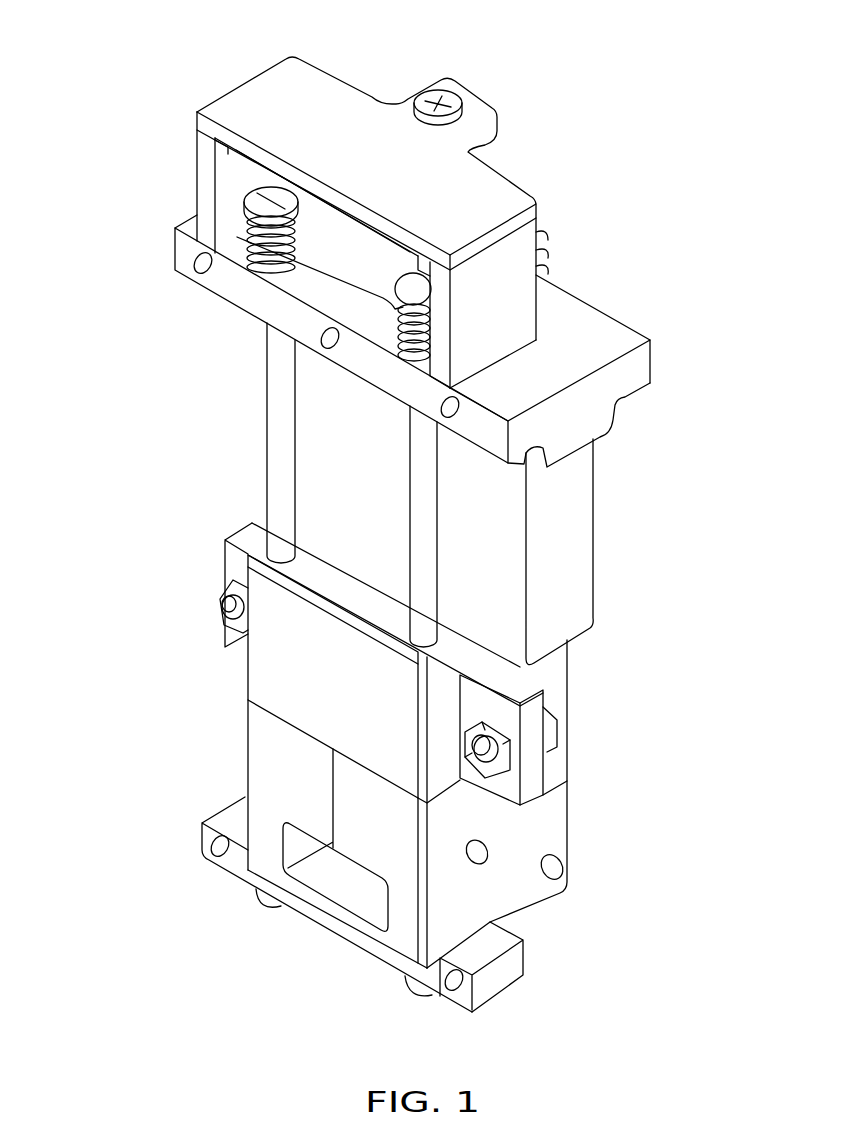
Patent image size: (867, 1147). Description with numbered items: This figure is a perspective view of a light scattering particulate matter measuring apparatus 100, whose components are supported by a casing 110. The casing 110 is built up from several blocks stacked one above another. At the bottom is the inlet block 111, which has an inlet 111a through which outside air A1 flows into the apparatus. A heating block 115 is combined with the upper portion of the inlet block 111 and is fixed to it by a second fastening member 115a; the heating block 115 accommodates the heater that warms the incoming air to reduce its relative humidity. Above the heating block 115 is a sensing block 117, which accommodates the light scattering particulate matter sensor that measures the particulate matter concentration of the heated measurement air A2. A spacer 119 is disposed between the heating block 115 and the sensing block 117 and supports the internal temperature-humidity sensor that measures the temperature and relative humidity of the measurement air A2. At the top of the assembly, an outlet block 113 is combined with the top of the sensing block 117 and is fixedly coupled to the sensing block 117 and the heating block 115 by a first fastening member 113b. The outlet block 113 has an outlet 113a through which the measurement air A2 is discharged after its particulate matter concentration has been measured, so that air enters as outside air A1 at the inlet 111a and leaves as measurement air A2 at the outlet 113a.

The light scattering particulate matter measuring apparatus 100 is at (100, 138).
The casing 110 is at (698, 304).
The inlet block 111 is at (520, 893).
The inlet 111a is at (380, 903).
The outlet block 113 is at (500, 270).
The outlet 113a is at (372, 248).
The first fastening member 113b is at (440, 330).
The heating block 115 is at (280, 677).
The second fastening member 115a is at (507, 760).
The sensing block 117 is at (572, 538).
The spacer 119 is at (253, 568).
The outside air A1 is at (341, 895).
The measurement air A2 is at (343, 230).